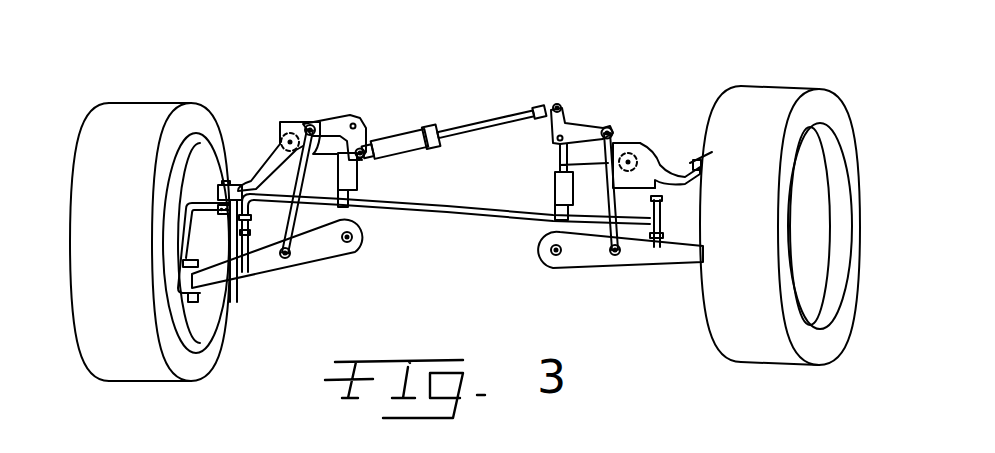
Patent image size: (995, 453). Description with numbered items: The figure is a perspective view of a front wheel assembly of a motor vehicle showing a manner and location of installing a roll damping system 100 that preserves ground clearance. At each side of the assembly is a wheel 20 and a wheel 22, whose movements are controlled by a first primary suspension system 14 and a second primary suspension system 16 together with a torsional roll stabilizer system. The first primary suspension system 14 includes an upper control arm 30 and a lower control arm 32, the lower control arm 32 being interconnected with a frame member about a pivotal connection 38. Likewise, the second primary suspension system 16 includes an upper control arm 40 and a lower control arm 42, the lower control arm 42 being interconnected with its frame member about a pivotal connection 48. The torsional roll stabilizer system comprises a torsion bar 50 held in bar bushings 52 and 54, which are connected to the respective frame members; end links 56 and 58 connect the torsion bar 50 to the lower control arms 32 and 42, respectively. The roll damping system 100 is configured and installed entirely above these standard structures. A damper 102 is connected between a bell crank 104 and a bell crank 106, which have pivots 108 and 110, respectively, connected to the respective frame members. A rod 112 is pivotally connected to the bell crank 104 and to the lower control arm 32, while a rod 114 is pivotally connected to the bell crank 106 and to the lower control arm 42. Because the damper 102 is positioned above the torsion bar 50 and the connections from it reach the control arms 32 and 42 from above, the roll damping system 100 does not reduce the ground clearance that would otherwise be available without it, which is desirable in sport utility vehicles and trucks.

The first primary suspension system 14 is at (268, 100).
The second primary suspension system 16 is at (673, 94).
The wheel 20 is at (190, 370).
The wheel 22 is at (757, 345).
The upper control arm 30 is at (265, 172).
The lower control arm 32 is at (243, 268).
The pivotal connection 38 is at (350, 244).
The upper control arm 40 is at (655, 168).
The lower control arm 42 is at (653, 257).
The pivotal connection 48 is at (553, 256).
The torsion bar 50 is at (452, 212).
The bar bushing 52 is at (350, 206).
The bar bushing 54 is at (553, 216).
The end link 56 is at (258, 240).
The end link 58 is at (647, 232).
The roll damping system 100 is at (436, 106).
The damper 102 is at (408, 146).
The bell crank 104 is at (350, 117).
The bell crank 106 is at (568, 123).
The pivot 108 is at (364, 148).
The pivot 110 is at (553, 105).
The rod 112 is at (312, 125).
The rod 114 is at (610, 128).